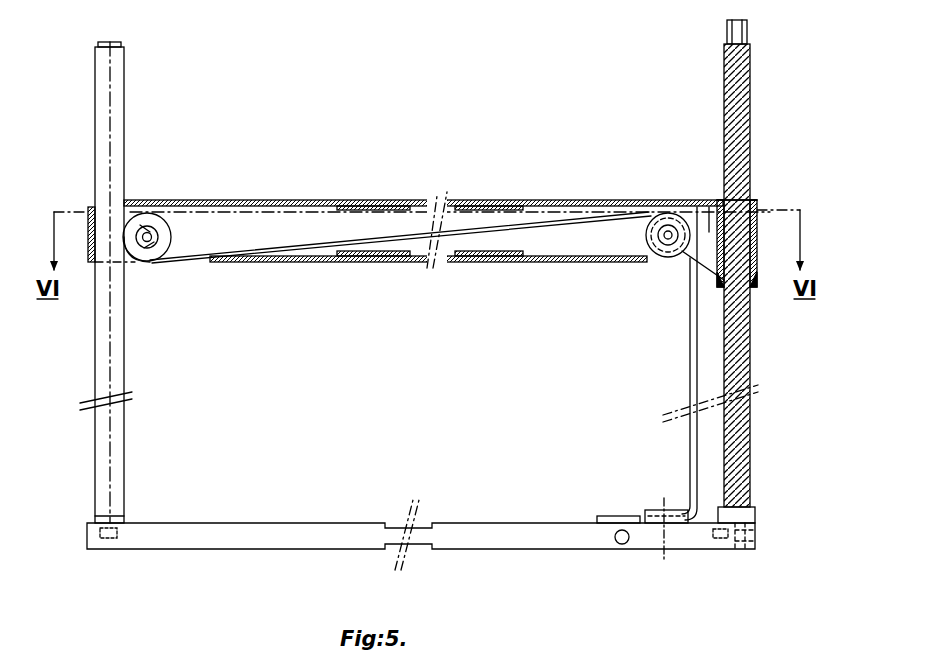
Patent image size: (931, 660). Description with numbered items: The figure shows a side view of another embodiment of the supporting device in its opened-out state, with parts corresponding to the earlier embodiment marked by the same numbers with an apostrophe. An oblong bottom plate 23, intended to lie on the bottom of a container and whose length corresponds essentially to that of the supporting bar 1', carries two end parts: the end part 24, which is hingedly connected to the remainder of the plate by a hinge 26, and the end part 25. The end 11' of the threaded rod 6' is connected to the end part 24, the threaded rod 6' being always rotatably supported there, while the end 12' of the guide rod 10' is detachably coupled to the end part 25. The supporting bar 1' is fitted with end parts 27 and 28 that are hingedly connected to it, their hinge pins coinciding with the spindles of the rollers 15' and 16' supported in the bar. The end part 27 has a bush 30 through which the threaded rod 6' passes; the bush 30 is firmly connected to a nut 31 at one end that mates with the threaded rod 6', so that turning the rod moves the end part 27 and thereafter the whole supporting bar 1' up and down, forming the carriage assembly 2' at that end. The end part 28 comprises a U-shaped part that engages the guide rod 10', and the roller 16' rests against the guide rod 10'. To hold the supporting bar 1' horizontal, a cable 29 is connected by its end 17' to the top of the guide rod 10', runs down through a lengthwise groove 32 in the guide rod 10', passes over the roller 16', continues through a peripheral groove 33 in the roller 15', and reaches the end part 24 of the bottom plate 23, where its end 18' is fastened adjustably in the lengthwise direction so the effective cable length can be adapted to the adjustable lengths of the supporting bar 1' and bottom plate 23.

The supporting bar 1' is at (423, 216).
The carriage assembly 2' is at (766, 177).
The threaded rod 6' is at (732, 263).
The guide rod 10' is at (89, 285).
The end of the threaded rod 11' is at (764, 501).
The end of the guide rod 12' is at (84, 515).
The roller 15' is at (661, 270).
The roller 16' is at (149, 265).
The end of the cable 17' is at (135, 28).
The end of the cable 18' is at (642, 508).
The bottom plate 23 is at (311, 550).
The end part of the bottom plate 24 is at (708, 553).
The end part of the bottom plate 25 is at (120, 551).
The hinge 26 is at (622, 546).
The end part of the supporting bar 27 is at (709, 228).
The end part of the supporting bar 28 is at (90, 262).
The cable 29 is at (510, 228).
The bush 30 is at (757, 250).
The nut 31 is at (750, 281).
The groove 32 is at (120, 368).
The peripheral groove 33 is at (648, 247).